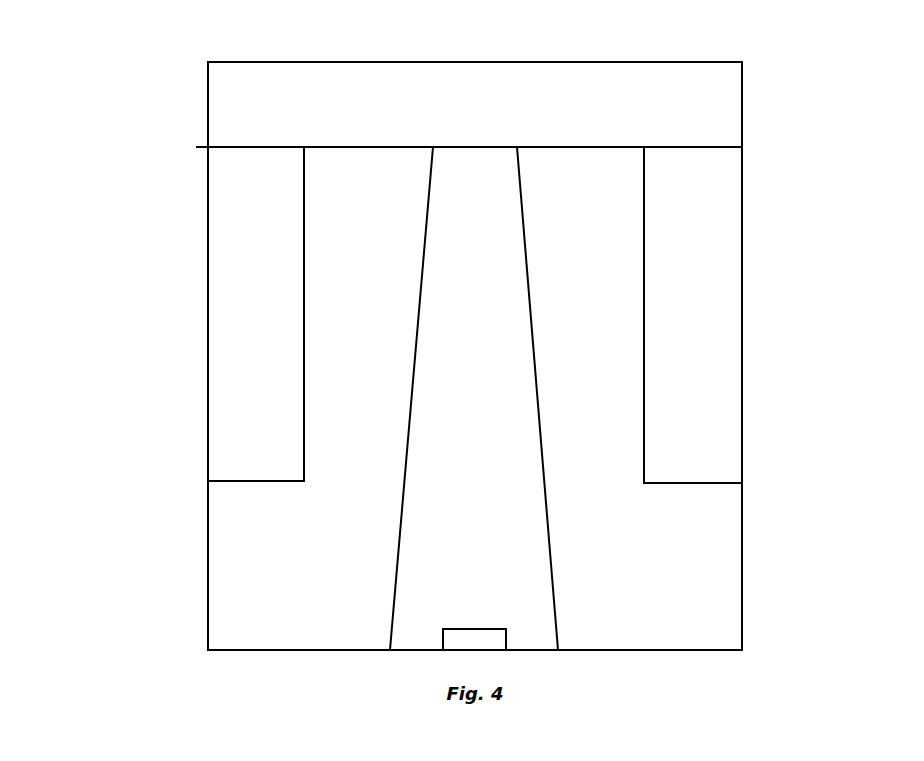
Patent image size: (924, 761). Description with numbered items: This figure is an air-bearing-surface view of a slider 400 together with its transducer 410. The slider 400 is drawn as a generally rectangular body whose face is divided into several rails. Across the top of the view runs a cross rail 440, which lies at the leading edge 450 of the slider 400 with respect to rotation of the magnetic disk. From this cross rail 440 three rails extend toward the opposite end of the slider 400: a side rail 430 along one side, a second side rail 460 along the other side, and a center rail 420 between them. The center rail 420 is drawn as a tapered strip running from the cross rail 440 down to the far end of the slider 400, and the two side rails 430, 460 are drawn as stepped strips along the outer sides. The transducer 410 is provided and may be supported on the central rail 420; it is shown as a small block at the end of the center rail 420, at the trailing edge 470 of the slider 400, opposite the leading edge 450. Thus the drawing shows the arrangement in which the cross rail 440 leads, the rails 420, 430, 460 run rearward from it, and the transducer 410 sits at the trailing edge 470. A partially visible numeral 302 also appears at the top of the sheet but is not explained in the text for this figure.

The substrate 302 is at (731, 5).
The slider 400 is at (63, 603).
The transducer 410 is at (465, 640).
The center rail 420 is at (443, 473).
The side rail 430 is at (250, 283).
The cross rail 440 is at (250, 94).
The leading edge 450 is at (283, 62).
The side rail 460 is at (720, 307).
The trailing edge 470 is at (644, 650).